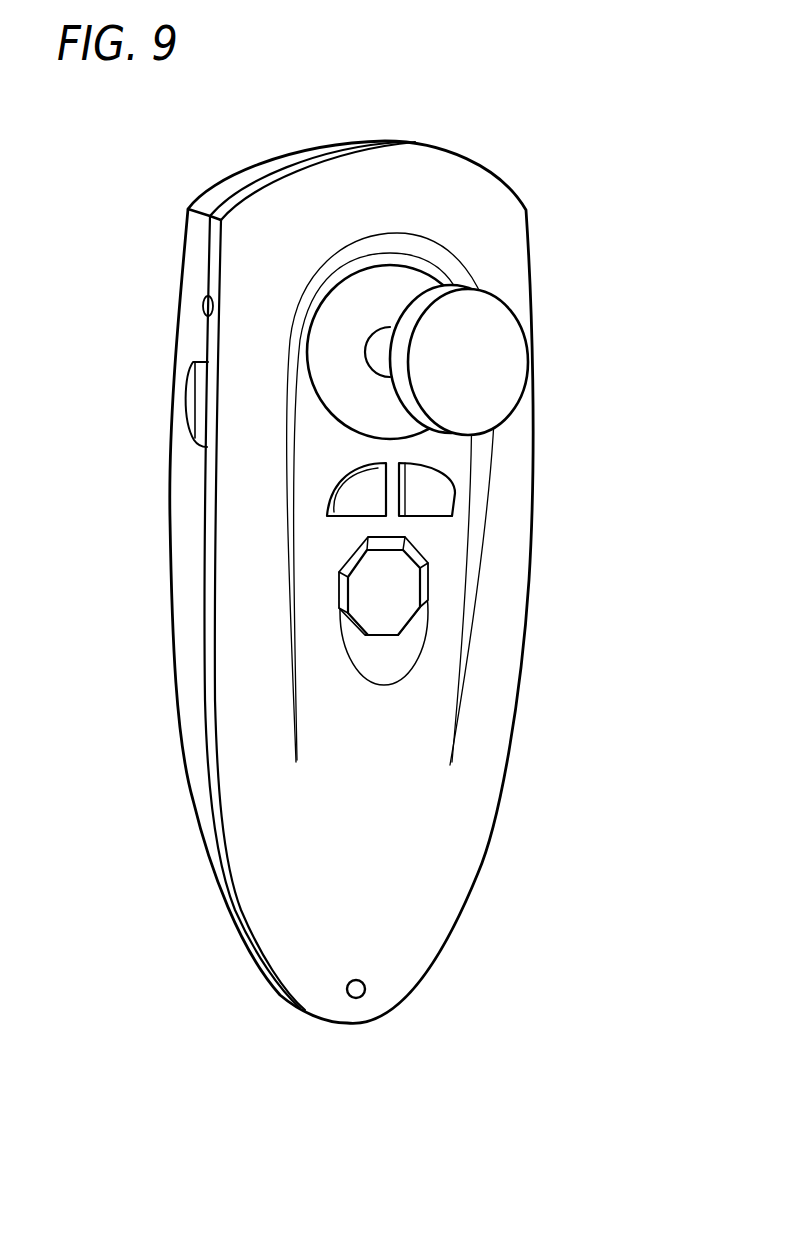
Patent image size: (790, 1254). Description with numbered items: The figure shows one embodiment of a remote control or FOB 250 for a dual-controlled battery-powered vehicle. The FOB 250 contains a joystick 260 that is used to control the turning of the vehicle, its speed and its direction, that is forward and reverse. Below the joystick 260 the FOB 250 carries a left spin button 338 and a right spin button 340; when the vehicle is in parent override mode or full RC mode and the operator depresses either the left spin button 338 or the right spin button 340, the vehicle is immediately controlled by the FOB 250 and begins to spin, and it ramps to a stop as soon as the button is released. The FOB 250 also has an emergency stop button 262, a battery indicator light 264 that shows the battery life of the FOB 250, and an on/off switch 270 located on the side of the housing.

The FOB 250 is at (478, 873).
The joystick 260 is at (487, 358).
The emergency stop button 262 is at (392, 594).
The battery indicator light 264 is at (347, 990).
The on/off switch 270 is at (188, 400).
The left spin button 338 is at (355, 497).
The right spin button 340 is at (437, 489).